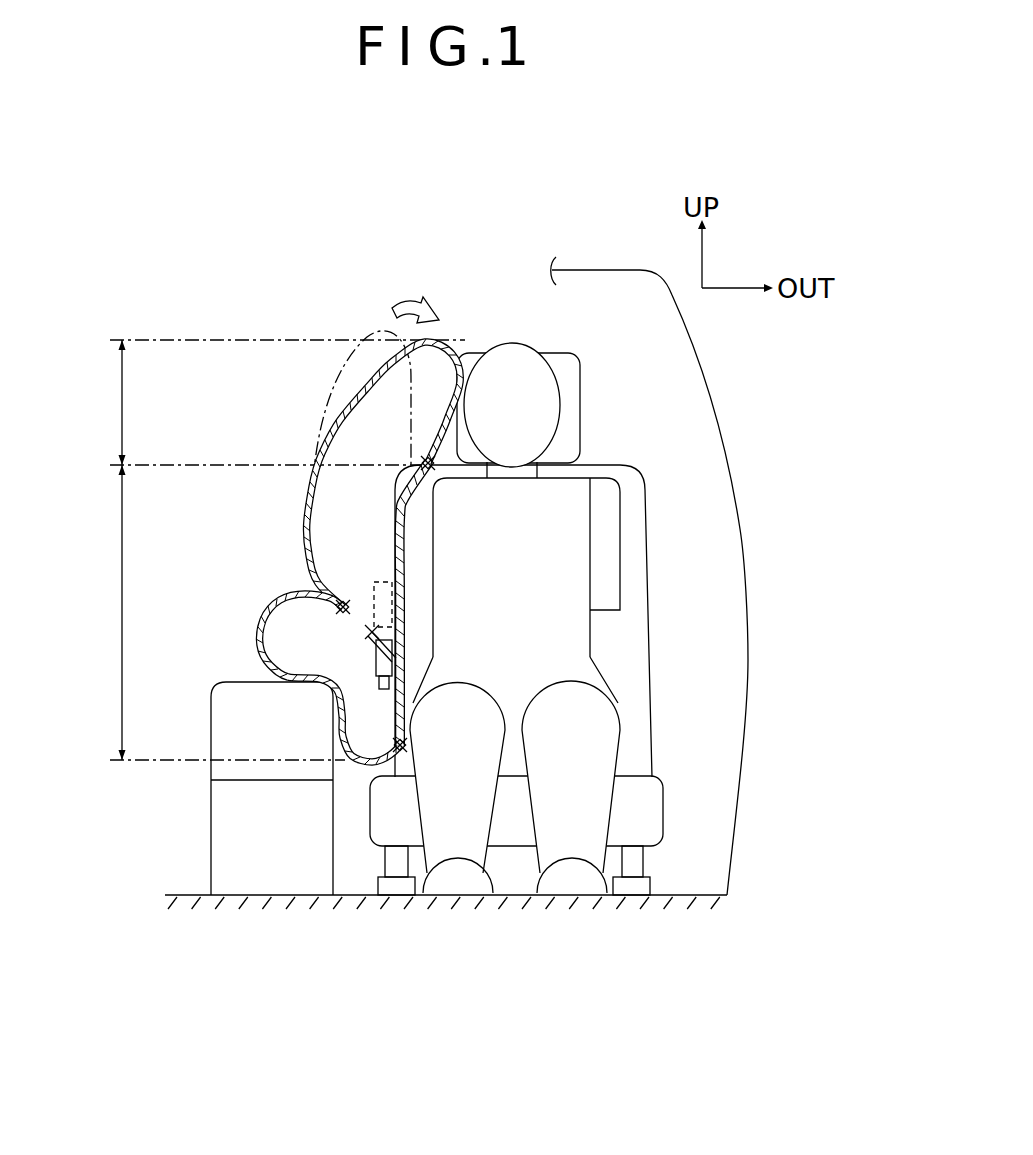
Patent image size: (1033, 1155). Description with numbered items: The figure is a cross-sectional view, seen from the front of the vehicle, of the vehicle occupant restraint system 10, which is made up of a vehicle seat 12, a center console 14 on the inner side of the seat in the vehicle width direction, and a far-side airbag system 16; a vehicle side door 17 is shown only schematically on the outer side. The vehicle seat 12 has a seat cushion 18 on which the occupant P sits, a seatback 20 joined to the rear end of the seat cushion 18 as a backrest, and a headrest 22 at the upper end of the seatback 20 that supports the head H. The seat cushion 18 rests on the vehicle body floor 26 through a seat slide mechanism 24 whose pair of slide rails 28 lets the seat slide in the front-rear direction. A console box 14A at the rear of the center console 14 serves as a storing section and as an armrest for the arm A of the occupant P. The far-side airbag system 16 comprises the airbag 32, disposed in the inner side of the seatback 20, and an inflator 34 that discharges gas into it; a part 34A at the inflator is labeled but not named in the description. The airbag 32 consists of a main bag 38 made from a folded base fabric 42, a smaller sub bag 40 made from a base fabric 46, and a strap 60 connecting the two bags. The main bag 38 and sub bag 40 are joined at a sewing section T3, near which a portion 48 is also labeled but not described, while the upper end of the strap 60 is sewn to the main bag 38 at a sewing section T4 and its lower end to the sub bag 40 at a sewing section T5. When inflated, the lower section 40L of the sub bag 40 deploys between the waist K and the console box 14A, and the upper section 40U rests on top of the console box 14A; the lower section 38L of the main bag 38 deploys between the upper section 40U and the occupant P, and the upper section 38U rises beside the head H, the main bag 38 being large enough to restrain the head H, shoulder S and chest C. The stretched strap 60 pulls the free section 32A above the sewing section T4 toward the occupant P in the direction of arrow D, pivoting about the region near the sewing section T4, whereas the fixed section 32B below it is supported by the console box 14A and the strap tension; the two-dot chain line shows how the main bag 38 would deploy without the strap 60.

The vehicle occupant restraint system 10 is at (424, 569).
The vehicle seat 12 is at (558, 621).
The center console 14 is at (234, 788).
The console box 14A is at (211, 715).
The far-side airbag system 16 is at (337, 508).
The vehicle side door 17 is at (744, 592).
The seat cushion 18 is at (663, 805).
The seatback 20 is at (555, 621).
The headrest 22 is at (580, 420).
The seat slide mechanism 24 is at (396, 898).
The vehicle body floor 26 is at (267, 893).
The slide rails 28 is at (539, 909).
The far-side airbag 32 is at (337, 548).
The free section 32A is at (122, 410).
The fixed section 32B is at (122, 620).
The inflator 34 is at (440, 606).
The inflator gas outlet 34A is at (407, 680).
The main bag 38 is at (359, 538).
The upper section of main bag 38U is at (347, 392).
The lower section of main bag 38L is at (405, 590).
The sub bag 40 is at (275, 672).
The upper section of sub bag 40U is at (261, 630).
The lower section of sub bag 40L is at (334, 712).
The base fabric 42 is at (367, 538).
The base fabric 46 is at (285, 678).
The connection portion 48 is at (347, 614).
The strap 60 is at (409, 646).
The sewing section T3 is at (340, 597).
The sewing section T4 is at (420, 458).
The sewing section T5 is at (408, 750).
The shoulder S is at (416, 503).
The occupant P is at (619, 531).
The chest C is at (559, 590).
The arm A is at (620, 592).
The waist K is at (620, 723).
The head H is at (557, 387).
The arrow D is at (416, 287).